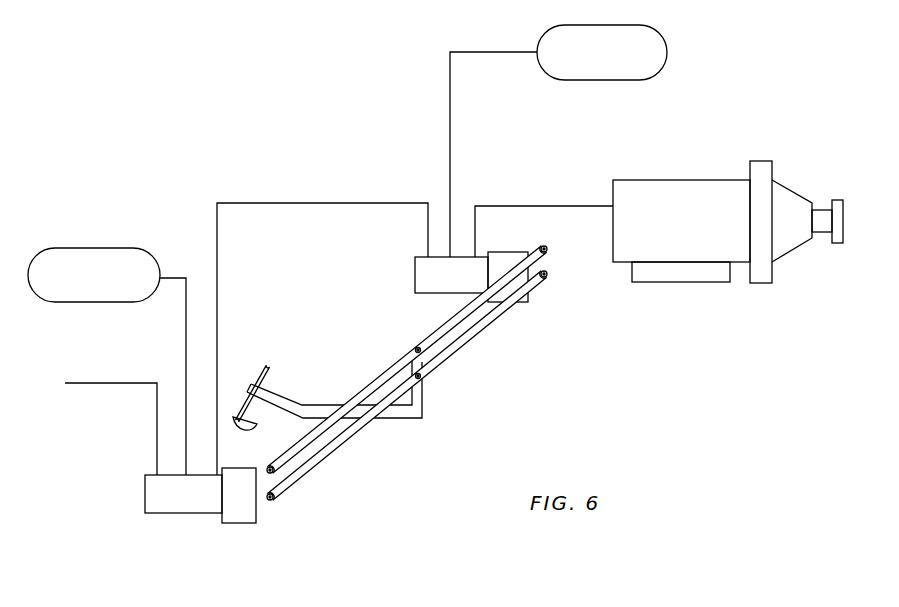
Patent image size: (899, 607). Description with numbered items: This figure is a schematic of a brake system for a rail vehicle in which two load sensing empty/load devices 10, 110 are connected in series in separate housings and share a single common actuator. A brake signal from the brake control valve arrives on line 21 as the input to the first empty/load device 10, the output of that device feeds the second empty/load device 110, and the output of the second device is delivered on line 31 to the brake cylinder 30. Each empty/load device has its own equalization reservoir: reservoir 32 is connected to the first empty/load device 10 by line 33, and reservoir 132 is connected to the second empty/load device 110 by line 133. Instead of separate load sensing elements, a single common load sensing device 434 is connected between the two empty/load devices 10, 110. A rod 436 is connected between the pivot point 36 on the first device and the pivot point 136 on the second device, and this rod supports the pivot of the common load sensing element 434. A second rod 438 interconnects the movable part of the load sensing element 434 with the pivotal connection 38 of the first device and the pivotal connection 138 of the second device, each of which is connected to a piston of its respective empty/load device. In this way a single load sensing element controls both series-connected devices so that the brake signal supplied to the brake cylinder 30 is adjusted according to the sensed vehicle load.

The empty/load device 10 is at (200, 524).
The line 21 is at (157, 422).
The brake cylinder 30 is at (688, 205).
The line 31 is at (561, 203).
The equalization reservoir 32 is at (133, 262).
The line 33 is at (186, 345).
The pivot point 36 is at (270, 467).
The pivotal connection 38 is at (278, 500).
The empty/load device 110 is at (513, 315).
The equalization reservoir 132 is at (632, 42).
The line 133 is at (450, 115).
The pivot point 136 is at (542, 247).
The pivotal connection 138 is at (547, 277).
The common load sensing device 434 is at (408, 418).
The rod 436 is at (383, 378).
The rod 438 is at (468, 343).